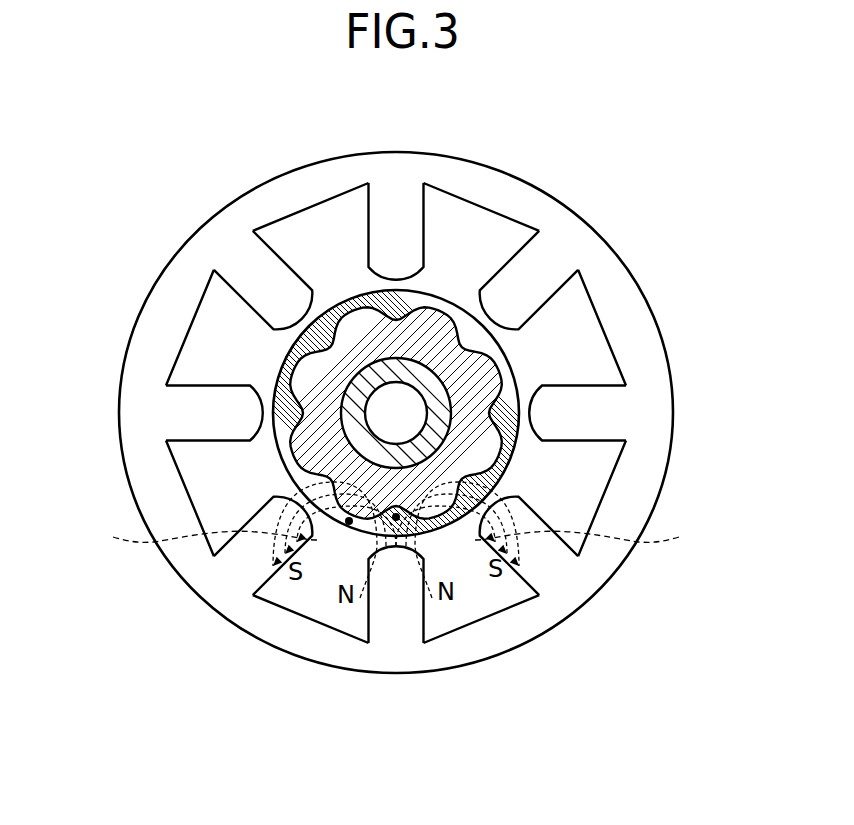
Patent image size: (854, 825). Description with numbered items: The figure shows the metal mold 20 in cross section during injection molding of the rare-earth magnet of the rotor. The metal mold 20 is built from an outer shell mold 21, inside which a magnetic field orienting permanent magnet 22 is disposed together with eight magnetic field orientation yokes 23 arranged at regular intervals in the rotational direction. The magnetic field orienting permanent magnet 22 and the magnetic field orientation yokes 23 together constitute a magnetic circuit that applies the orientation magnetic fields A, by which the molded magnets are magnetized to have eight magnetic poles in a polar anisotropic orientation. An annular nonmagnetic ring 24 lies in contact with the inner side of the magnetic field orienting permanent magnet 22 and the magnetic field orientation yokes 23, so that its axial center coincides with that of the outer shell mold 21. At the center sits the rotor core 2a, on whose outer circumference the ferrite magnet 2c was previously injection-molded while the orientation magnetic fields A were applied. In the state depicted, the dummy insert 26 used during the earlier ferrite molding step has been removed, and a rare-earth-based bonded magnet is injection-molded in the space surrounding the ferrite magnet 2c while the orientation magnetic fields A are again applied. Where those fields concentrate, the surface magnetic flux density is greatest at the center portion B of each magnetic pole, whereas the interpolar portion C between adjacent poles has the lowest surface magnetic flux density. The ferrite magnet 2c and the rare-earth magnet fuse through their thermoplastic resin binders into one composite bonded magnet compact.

The metal mold 20 is at (428, 394).
The outer shell mold 21 is at (643, 292).
The magnetic field orienting permanent magnet 22 is at (587, 335).
The magnetic field orientation yokes 23 is at (613, 410).
The nonmagnetic ring 24 is at (451, 291).
The dummy insert 26 is at (285, 412).
The rotor core 2a is at (398, 371).
The ferrite magnet 2c is at (330, 367).
The orientation magnetic fields A is at (394, 540).
The center portion of each magnetic pole B is at (396, 517).
The interpolar portion C is at (349, 521).